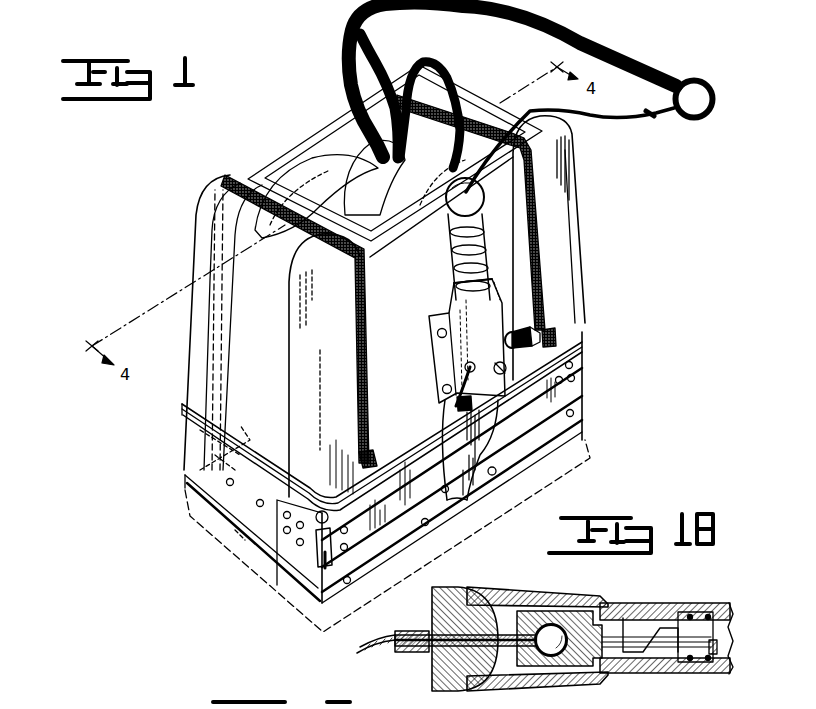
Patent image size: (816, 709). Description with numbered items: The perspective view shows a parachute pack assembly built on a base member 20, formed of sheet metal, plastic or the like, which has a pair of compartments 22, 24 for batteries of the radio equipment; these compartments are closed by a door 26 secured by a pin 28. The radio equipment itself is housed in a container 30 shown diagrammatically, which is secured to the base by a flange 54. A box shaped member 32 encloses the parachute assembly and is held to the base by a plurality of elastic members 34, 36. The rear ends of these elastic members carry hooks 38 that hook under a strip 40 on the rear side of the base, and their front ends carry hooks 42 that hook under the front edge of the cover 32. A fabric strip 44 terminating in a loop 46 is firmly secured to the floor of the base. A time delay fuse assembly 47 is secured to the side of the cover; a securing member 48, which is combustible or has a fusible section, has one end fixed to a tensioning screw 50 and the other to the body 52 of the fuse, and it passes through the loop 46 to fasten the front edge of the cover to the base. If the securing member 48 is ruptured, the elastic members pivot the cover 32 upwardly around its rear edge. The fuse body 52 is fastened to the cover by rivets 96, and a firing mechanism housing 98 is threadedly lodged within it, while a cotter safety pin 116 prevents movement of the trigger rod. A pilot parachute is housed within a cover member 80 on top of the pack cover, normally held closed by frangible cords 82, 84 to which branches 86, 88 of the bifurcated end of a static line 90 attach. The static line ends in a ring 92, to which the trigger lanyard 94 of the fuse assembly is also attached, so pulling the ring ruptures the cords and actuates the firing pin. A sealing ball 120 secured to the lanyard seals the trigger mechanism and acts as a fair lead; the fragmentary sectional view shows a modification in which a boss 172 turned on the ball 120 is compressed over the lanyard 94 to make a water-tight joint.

In FIG. 1, the base member 20 is at (585, 331).
In FIG. 1, the compartment 22 is at (492, 444).
In FIG. 1, the compartment 24 is at (472, 521).
In FIG. 1, the door 26 is at (394, 517).
In FIG. 1, the pin 28 is at (318, 506).
In FIG. 1, the container 30 is at (587, 430).
In FIG. 1, the box shaped member 32 is at (583, 247).
In FIG. 1, the elastic member 34 is at (541, 205).
In FIG. 1, the elastic member 36 is at (372, 325).
In FIG. 1, the hooks 38 is at (185, 499).
In FIG. 1, the strip 40 is at (185, 462).
In FIG. 1, the hooks 42 is at (357, 450).
In FIG. 1, the fabric strip 44 is at (457, 476).
In FIG. 1, the loop 46 is at (495, 473).
In FIG. 1, the time delay fuse assembly 47 is at (508, 294).
In FIG. 1, the securing member 48 is at (465, 369).
In FIG. 1, the tensioning screw 50 is at (503, 387).
In FIG. 1, the body 52 is at (505, 332).
In FIG. 1, the flange 54 is at (242, 532).
In FIG. 1, the cover member 80 is at (275, 166).
In FIG. 1, the frangible cord 82 is at (318, 147).
In FIG. 1, the frangible cord 84 is at (388, 192).
In FIG. 1, the branch 86 is at (385, 68).
In FIG. 1, the branch 88 is at (345, 80).
In FIG. 1, the static line 90 is at (497, 28).
In FIG. 1, the ring 92 is at (702, 122).
In FIG. 1, the trigger lanyard 94 is at (634, 122).
In FIG. 18, the trigger lanyard 94 is at (372, 652).
In FIG. 1, the rivets 96 is at (438, 335).
In FIG. 1, the firing mechanism housing 98 is at (453, 282).
In FIG. 1, the cotter safety pin 116 is at (482, 238).
In FIG. 1, the sealing ball 120 is at (478, 195).
In FIG. 18, the sealing ball 120 is at (460, 580).
In FIG. 18, the boss 172 is at (404, 632).